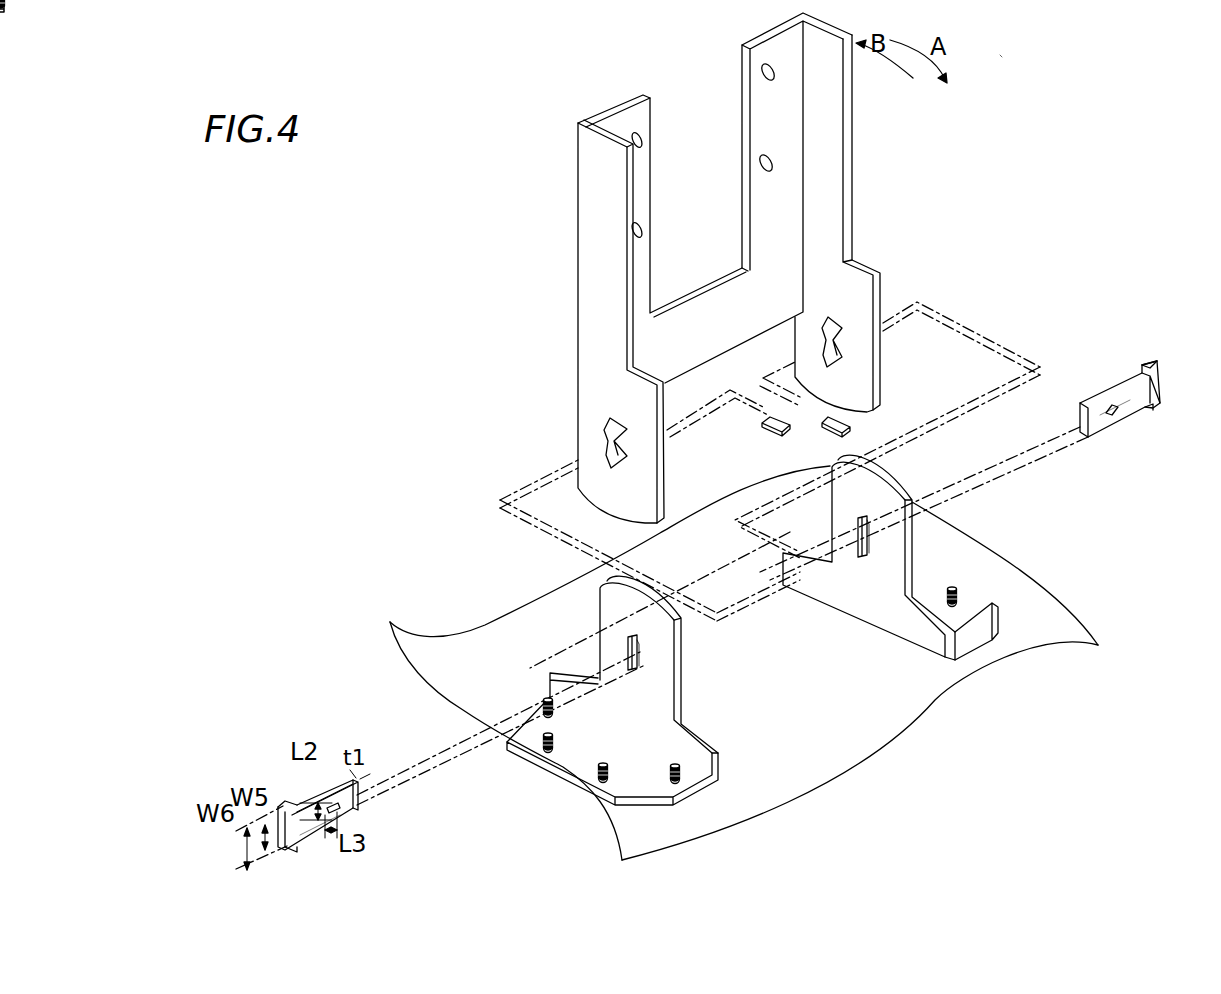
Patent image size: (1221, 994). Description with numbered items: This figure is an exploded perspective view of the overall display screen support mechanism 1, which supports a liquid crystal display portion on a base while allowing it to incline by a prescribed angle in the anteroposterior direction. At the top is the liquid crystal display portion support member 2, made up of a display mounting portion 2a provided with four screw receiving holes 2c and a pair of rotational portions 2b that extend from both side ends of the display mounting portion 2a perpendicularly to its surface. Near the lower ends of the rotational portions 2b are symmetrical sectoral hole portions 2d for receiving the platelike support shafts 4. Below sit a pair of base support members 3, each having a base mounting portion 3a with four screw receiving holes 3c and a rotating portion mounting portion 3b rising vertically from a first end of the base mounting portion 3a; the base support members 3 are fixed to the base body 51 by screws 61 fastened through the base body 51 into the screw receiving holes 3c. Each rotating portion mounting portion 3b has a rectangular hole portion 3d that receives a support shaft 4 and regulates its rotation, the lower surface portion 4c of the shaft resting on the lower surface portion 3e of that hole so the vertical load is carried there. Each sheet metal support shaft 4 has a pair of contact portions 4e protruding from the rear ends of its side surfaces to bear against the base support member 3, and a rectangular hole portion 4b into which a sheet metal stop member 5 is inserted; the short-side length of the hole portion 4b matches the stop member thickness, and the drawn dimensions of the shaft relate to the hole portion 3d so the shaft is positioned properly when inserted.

The display screen support mechanism 1 is at (980, 58).
The liquid crystal display portion support member 2 is at (598, 210).
The display mounting portion 2a is at (638, 113).
The rotational portions 2b is at (598, 177).
The screw receiving holes 2c is at (630, 137).
The symmetrical sectoral hole portions 2d is at (605, 440).
The base support members 3 is at (560, 672).
The base mounting portions 3a is at (632, 777).
The rotating portion mounting portions 3b is at (862, 600).
The screw receiving holes 3c is at (608, 771).
The rectangular hole portions 3d is at (630, 640).
The lower surface portion 3e is at (637, 665).
The platelike support shafts 4 is at (1160, 385).
The rectangular hole portion 4b is at (1107, 403).
The lower surface portion 4c is at (1117, 427).
The contact portions 4e is at (1147, 367).
The stop members 5 is at (765, 430).
The base body 51 is at (830, 730).
The screws 61 is at (545, 702).